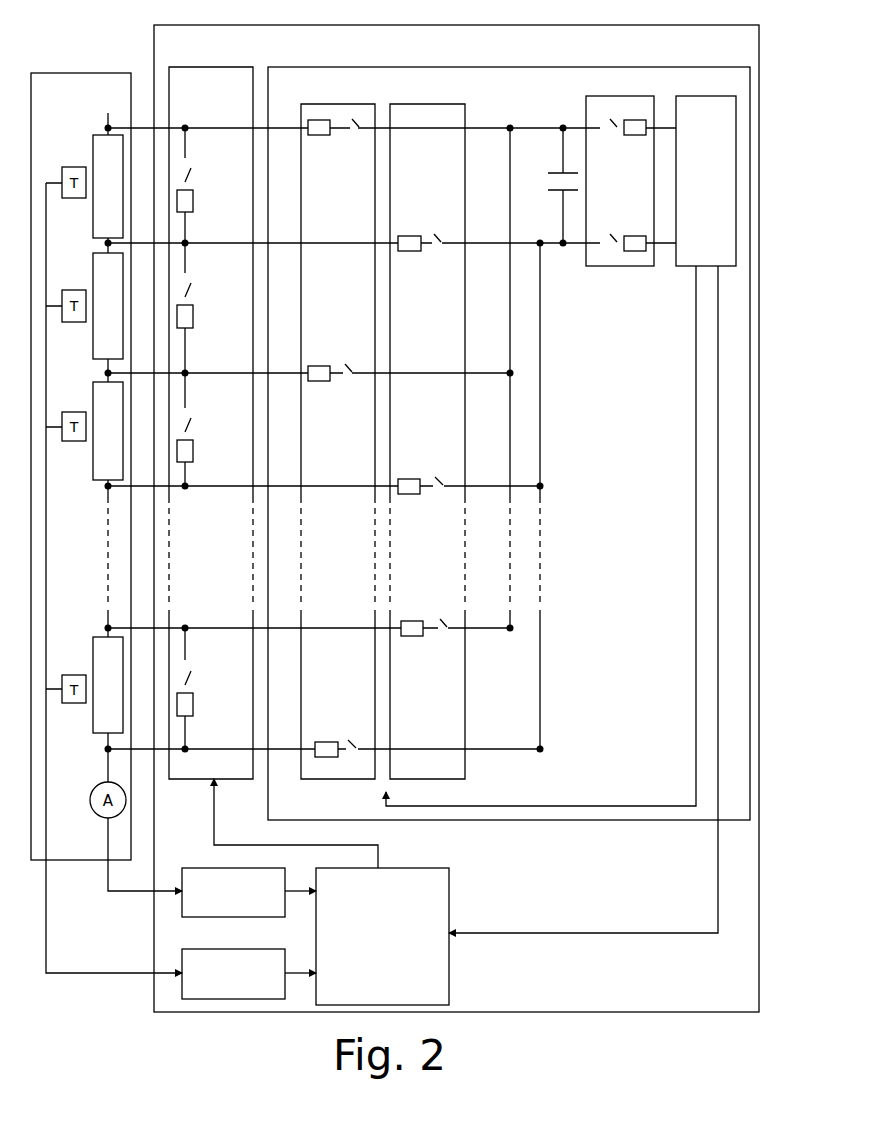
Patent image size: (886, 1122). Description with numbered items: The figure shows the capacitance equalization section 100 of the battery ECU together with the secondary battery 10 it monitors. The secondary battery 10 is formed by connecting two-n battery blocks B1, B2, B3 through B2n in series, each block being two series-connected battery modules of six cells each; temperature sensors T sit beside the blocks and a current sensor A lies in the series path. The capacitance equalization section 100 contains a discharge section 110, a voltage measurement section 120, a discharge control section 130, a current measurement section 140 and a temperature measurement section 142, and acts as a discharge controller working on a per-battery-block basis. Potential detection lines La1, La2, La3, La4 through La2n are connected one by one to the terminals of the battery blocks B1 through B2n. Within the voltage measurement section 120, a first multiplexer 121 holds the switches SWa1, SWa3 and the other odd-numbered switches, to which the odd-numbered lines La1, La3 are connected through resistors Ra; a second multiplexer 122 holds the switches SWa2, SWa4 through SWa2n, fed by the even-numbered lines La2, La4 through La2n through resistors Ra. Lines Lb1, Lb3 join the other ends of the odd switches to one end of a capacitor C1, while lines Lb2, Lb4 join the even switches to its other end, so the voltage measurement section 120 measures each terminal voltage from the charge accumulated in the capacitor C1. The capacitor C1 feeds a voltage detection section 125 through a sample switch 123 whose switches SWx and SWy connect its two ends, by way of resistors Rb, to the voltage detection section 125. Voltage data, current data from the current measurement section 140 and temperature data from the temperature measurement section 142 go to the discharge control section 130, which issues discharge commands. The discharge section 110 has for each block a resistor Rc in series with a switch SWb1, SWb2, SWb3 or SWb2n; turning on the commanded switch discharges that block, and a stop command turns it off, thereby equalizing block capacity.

The secondary battery 10 is at (85, 73).
The capacitance equalization section 100 is at (455, 25).
The discharge section 110 is at (205, 67).
The voltage measurement section 120 is at (553, 67).
The first multiplexer 121 is at (355, 104).
The second multiplexer 122 is at (437, 104).
The sample switch 123 is at (615, 96).
The voltage detection section 125 is at (712, 96).
The discharge control section 130 is at (452, 876).
The current measurement section 140 is at (190, 868).
The temperature measurement section 142 is at (194, 949).
The battery block B1 is at (93, 145).
The battery block B2 is at (93, 268).
The battery block B3 is at (93, 393).
The battery block B2n is at (93, 655).
The potential detection line La1 is at (145, 127).
The potential detection line La2 is at (342, 243).
The potential detection line La3 is at (290, 370).
The potential detection line La4 is at (338, 486).
The potential detection line La2n is at (180, 628).
The potential detection line Lb1 is at (500, 132).
The potential detection line Lb2 is at (500, 247).
The potential detection line Lb3 is at (500, 377).
The potential detection line Lb4 is at (500, 490).
The resistor Ra is at (318, 120).
The resistor Rb is at (634, 120).
The resistor Rc is at (193, 198).
The capacitor C1 is at (545, 185).
The switch SWa1 is at (344, 143).
The switch SWa2 is at (429, 230).
The switch SWa3 is at (346, 385).
The switch SWa4 is at (431, 473).
The switch SWa2n is at (429, 639).
The switch SWb1 is at (206, 155).
The switch SWb2 is at (206, 270).
The switch SWb3 is at (212, 402).
The switch SWb2n is at (215, 656).
The switch SWx is at (610, 139).
The switch SWy is at (610, 229).